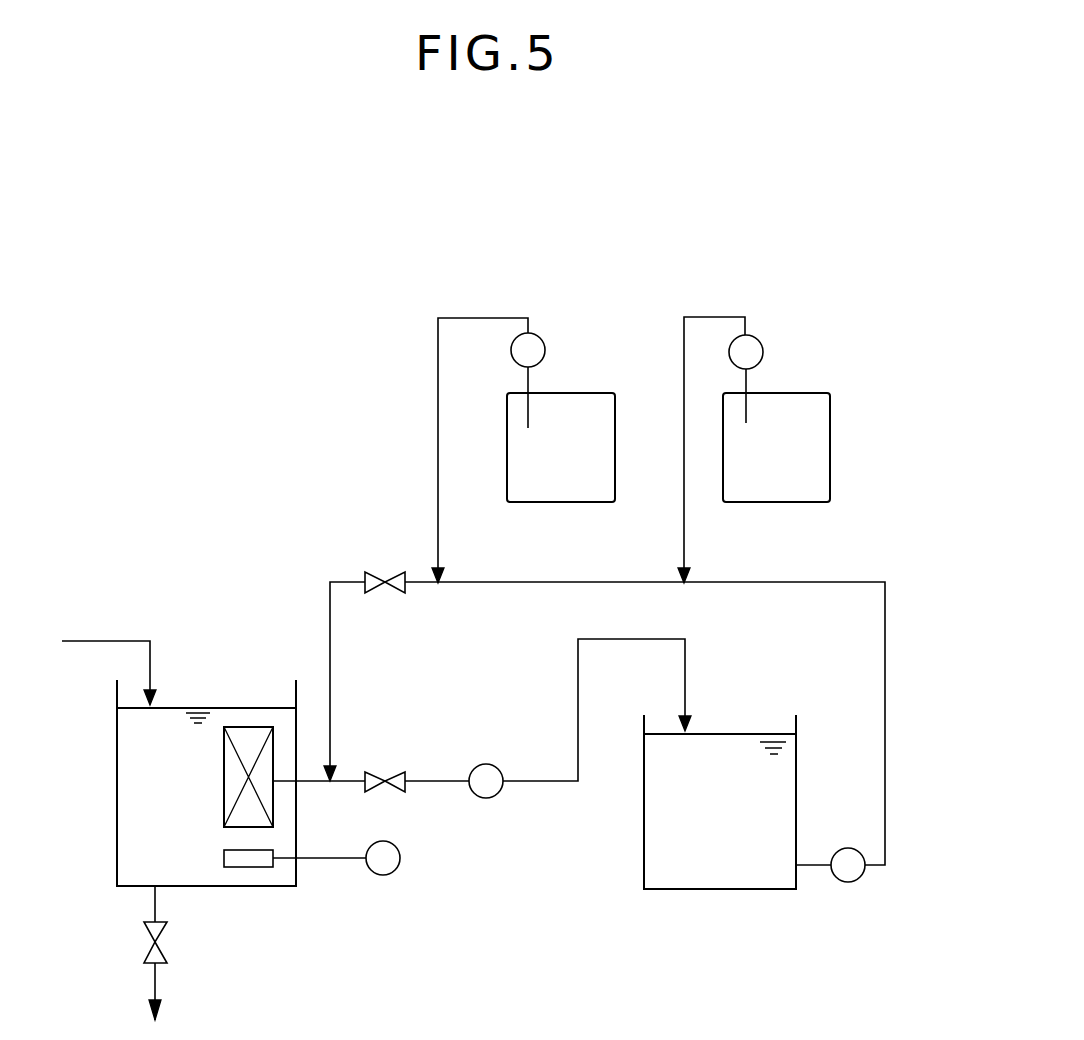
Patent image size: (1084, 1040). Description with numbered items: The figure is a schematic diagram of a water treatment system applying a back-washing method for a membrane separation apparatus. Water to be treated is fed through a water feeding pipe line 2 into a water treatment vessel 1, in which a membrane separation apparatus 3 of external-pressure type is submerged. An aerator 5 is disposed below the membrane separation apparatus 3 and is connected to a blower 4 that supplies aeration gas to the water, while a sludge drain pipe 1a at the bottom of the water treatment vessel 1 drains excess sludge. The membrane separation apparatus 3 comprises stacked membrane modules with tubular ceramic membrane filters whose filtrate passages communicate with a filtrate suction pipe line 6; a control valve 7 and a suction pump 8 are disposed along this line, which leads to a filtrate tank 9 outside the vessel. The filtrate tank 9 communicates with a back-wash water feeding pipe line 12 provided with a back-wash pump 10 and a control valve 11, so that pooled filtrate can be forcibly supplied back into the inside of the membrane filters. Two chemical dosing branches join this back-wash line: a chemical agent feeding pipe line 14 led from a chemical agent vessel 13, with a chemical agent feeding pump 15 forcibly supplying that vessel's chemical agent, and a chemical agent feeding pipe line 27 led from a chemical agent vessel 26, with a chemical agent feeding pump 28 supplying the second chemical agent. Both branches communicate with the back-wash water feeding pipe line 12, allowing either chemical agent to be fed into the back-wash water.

The water treatment vessel 1 is at (117, 822).
The sludge drain pipe 1a is at (150, 972).
The water feeding pipe line 2 is at (116, 641).
The membrane separation apparatus 3 is at (249, 740).
The blower 4 is at (389, 876).
The aerator 5 is at (241, 868).
The filtrate suction pipe line 6 is at (578, 685).
The control valve 7 is at (378, 771).
The suction pump 8 is at (486, 764).
The filtrate tank 9 is at (663, 890).
The back-wash pump 10 is at (847, 883).
The control valve 11 is at (376, 572).
The back-wash water feeding pipe line 12 is at (887, 706).
The chemical agent vessel 13 is at (559, 503).
The chemical agent feeding pipe line 14 is at (438, 402).
The chemical agent feeding pump 15 is at (538, 337).
The chemical agent vessel 26 is at (830, 460).
The chemical agent feeding pipe line 27 is at (684, 358).
The chemical agent feeding pump 28 is at (760, 340).